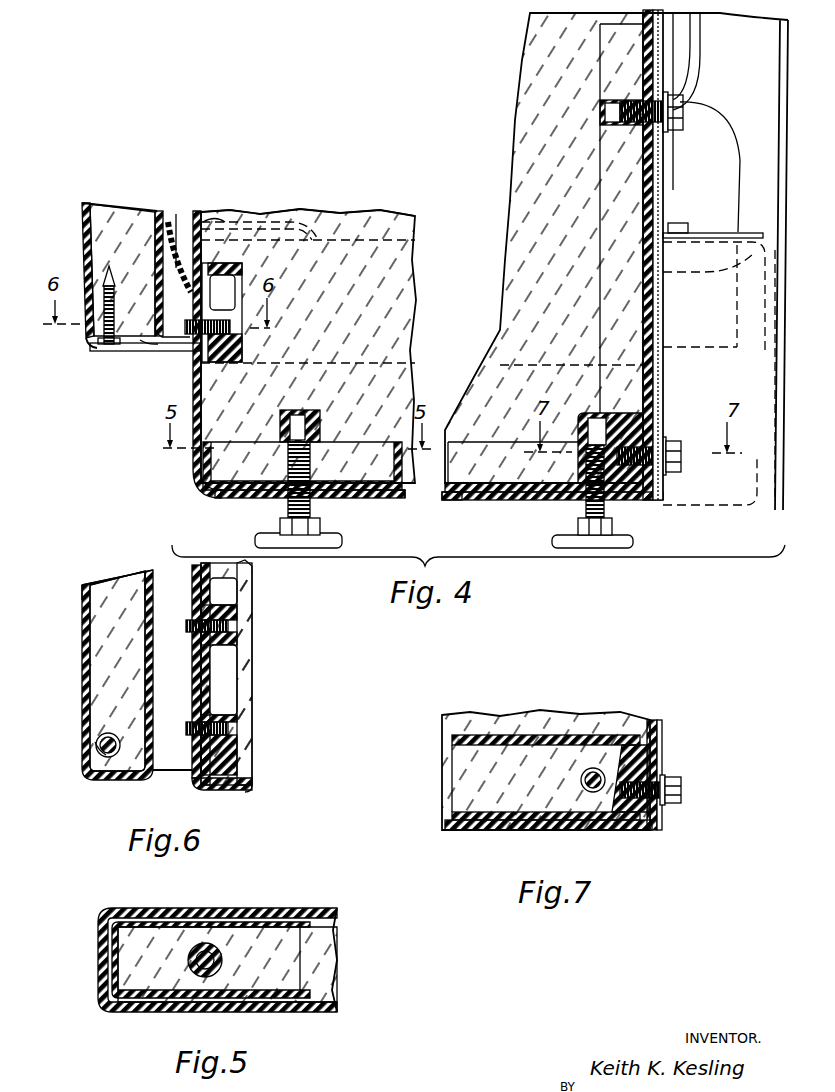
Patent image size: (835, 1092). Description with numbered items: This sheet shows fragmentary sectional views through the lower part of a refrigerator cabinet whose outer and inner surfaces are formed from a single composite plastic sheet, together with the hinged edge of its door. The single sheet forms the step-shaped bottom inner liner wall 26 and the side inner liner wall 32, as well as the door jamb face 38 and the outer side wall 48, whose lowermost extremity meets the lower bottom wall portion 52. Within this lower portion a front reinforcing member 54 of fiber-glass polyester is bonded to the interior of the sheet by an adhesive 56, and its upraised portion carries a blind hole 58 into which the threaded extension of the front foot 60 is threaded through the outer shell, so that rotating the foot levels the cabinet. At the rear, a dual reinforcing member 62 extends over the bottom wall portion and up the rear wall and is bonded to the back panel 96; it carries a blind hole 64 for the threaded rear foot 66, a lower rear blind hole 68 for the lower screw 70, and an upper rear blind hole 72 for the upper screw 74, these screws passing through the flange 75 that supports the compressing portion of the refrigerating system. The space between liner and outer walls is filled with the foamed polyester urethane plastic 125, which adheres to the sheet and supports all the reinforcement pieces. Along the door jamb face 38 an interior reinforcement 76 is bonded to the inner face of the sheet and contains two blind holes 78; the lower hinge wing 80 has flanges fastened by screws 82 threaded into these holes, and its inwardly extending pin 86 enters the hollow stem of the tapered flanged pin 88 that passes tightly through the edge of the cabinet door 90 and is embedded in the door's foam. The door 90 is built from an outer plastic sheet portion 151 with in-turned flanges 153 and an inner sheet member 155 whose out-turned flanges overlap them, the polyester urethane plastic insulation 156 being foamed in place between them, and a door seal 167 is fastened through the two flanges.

In FIG. 4, the bottom inner liner wall 26 is at (403, 213).
In FIG. 5, the side inner liner wall 32 is at (335, 915).
In FIG. 4, the door jamb face 38 is at (193, 382).
In FIG. 6, the door jamb face 38 is at (198, 788).
In FIG. 5, the door jamb face 38 is at (100, 958).
In FIG. 4, the outer side wall 48 is at (439, 495).
In FIG. 6, the outer side wall 48 is at (258, 790).
In FIG. 7, the outer side wall 48 is at (525, 832).
In FIG. 5, the outer side wall 48 is at (330, 1012).
In FIG. 4, the lower bottom wall portion 52 is at (457, 503).
In FIG. 4, the front reinforcing member 54 is at (340, 447).
In FIG. 5, the front reinforcing member 54 is at (302, 962).
In FIG. 4, the adhesive 56 is at (407, 492).
In FIG. 4, the blind hole 58 is at (290, 428).
In FIG. 5, the blind hole 58 is at (222, 960).
In FIG. 4, the front foot 60 is at (275, 531).
In FIG. 5, the front foot 60 is at (196, 955).
In FIG. 4, the dual reinforcing member 62 is at (630, 413).
In FIG. 7, the dual reinforcing member 62 is at (470, 790).
In FIG. 4, the blind hole 64 is at (585, 413).
In FIG. 7, the blind hole 64 is at (582, 785).
In FIG. 4, the rear foot 66 is at (607, 523).
In FIG. 7, the rear foot 66 is at (588, 770).
In FIG. 4, the lower rear blind hole 68 is at (608, 418).
In FIG. 7, the lower rear blind hole 68 is at (630, 830).
In FIG. 4, the lower screw 70 is at (675, 460).
In FIG. 7, the lower screw 70 is at (678, 783).
In FIG. 4, the upper rear blind hole 72 is at (605, 125).
In FIG. 4, the upper screw 74 is at (690, 100).
In FIG. 4, the flange 75 is at (660, 425).
In FIG. 7, the flange 75 is at (657, 722).
In FIG. 4, the interior reinforcement 76 is at (242, 340).
In FIG. 6, the interior reinforcement 76 is at (225, 686).
In FIG. 4, the blind hole 78 is at (242, 327).
In FIG. 6, the blind hole 78 is at (242, 604).
In FIG. 4, the lower hinge wing 80 is at (170, 358).
In FIG. 6, the lower hinge wing 80 is at (160, 771).
In FIG. 4, the screw 82 is at (162, 335).
In FIG. 6, the screw 82 is at (183, 617).
In FIG. 4, the pin 86 is at (110, 344).
In FIG. 6, the pin 86 is at (95, 742).
In FIG. 4, the flanged pin 88 is at (113, 279).
In FIG. 6, the flanged pin 88 is at (100, 736).
In FIG. 4, the cabinet door 90 is at (83, 223).
In FIG. 6, the cabinet door 90 is at (82, 676).
In FIG. 4, the back panel 96 is at (652, 12).
In FIG. 7, the back panel 96 is at (652, 718).
In FIG. 4, the foamed polyester urethane plastic 125 is at (388, 279).
In FIG. 6, the foamed polyester urethane plastic 125 is at (255, 701).
In FIG. 7, the foamed polyester urethane plastic 125 is at (465, 760).
In FIG. 5, the foamed polyester urethane plastic 125 is at (325, 939).
In FIG. 6, the outer plastic sheet portion 151 is at (82, 592).
In FIG. 4, the in-turned flange 153 is at (153, 350).
In FIG. 6, the in-turned flange 153 is at (138, 582).
In FIG. 4, the inner sheet member 155 is at (178, 223).
In FIG. 4, the polyester urethane plastic insulation 156 is at (113, 205).
In FIG. 6, the polyester urethane plastic insulation 156 is at (102, 587).
In FIG. 4, the door seal 167 is at (203, 227).